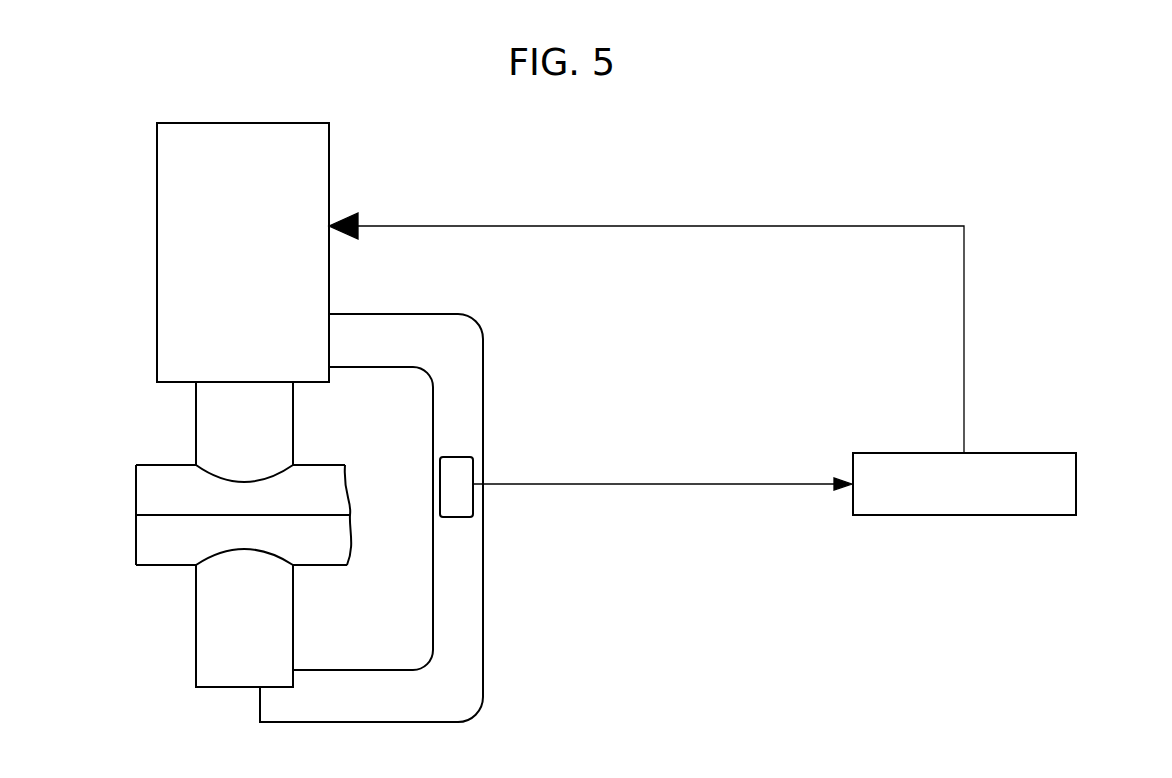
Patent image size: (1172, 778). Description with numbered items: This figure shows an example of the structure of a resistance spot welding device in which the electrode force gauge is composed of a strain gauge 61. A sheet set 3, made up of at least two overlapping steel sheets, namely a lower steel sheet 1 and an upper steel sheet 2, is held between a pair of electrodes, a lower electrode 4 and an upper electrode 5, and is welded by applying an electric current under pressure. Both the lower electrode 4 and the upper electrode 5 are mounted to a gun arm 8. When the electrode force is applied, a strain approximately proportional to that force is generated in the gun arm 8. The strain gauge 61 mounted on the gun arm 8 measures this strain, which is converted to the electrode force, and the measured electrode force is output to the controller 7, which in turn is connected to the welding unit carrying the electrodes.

The lower steel sheet 1 is at (136, 490).
The upper steel sheet 2 is at (136, 543).
The sheet set 3 is at (82, 464).
The lower electrode 4 is at (196, 637).
The upper electrode 5 is at (196, 425).
The strain gauge 61 is at (473, 471).
The controller 7 is at (1076, 486).
The gun arm 8 is at (483, 387).